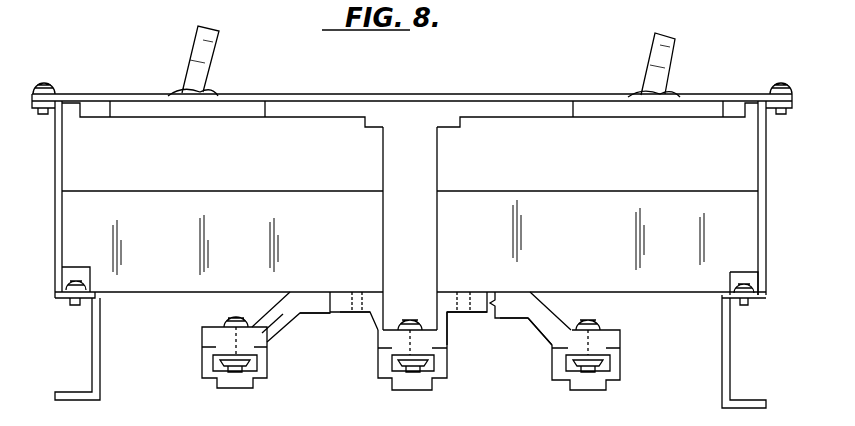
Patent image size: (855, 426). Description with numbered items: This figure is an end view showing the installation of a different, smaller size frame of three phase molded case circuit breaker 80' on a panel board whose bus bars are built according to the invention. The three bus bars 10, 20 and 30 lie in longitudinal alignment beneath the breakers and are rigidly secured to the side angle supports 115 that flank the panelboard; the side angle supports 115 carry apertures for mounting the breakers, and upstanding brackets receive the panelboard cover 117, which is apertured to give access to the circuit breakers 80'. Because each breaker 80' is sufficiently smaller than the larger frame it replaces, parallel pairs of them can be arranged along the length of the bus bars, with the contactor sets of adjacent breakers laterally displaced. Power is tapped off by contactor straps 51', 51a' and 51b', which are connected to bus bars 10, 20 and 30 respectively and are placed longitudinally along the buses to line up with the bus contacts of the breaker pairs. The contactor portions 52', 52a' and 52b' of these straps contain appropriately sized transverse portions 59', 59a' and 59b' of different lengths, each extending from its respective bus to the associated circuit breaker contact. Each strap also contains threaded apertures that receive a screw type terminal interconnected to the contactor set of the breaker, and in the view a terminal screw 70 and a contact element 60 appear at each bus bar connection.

The panelboard cover 117 is at (282, 97).
The circuit breaker 80' is at (407, 221).
The side angle support 115 is at (98, 348).
The bus bar 10 is at (268, 372).
The bus bar 20 is at (448, 378).
The bus bar 30 is at (621, 381).
The contact element 60 is at (216, 365).
The terminal screw 70 is at (226, 320).
The contactor portion 52' is at (311, 331).
The transverse portion 59' is at (316, 332).
The contactor strap 51' is at (285, 339).
The transverse portion 59a' is at (350, 341).
The contactor portion 52a' is at (464, 299).
The contactor strap 51a' is at (469, 338).
The contactor portion 52b' is at (535, 339).
The transverse portion 59b' is at (506, 327).
The contactor strap 51b' is at (527, 352).